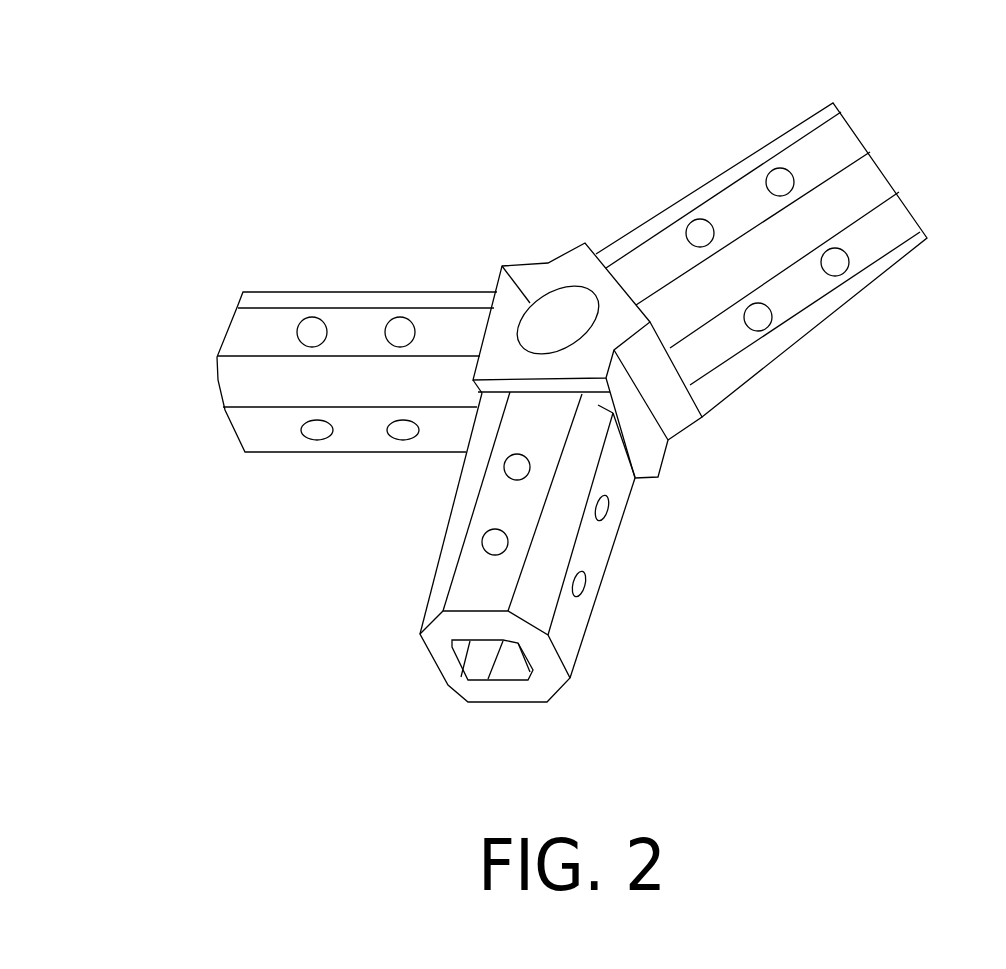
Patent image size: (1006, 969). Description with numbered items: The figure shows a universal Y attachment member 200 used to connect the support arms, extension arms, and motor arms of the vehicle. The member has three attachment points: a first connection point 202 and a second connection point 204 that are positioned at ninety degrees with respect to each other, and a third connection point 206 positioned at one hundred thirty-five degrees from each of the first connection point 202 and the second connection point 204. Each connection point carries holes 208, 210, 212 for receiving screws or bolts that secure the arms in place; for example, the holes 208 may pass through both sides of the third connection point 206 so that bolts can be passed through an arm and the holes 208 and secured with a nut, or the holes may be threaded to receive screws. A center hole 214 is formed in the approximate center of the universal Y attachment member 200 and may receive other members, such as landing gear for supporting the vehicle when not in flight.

The universal Y attachment member 200 is at (938, 103).
The first connection point 202 is at (230, 330).
The second connection point 204 is at (445, 681).
The third connection point 206 is at (898, 180).
The holes 208 is at (770, 172).
The holes 210 is at (504, 472).
The holes 212 is at (310, 318).
The center hole 214 is at (503, 266).